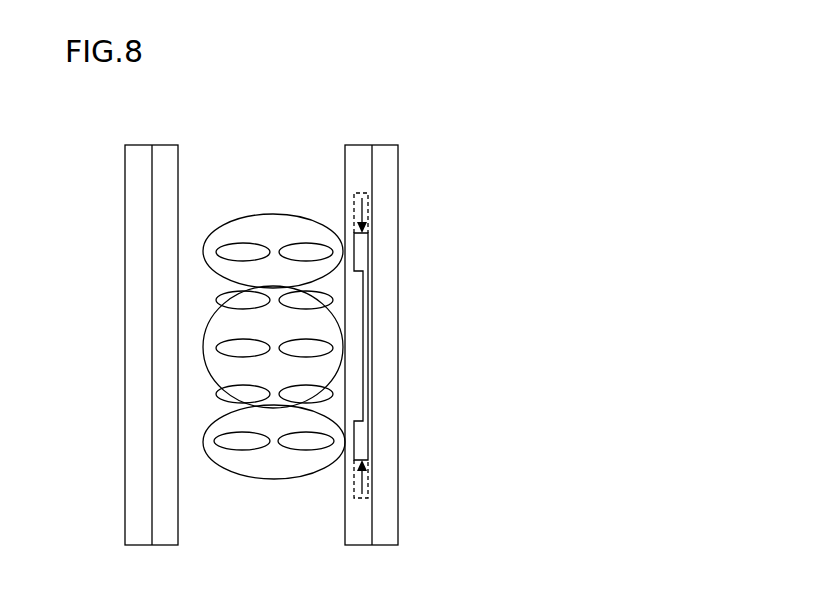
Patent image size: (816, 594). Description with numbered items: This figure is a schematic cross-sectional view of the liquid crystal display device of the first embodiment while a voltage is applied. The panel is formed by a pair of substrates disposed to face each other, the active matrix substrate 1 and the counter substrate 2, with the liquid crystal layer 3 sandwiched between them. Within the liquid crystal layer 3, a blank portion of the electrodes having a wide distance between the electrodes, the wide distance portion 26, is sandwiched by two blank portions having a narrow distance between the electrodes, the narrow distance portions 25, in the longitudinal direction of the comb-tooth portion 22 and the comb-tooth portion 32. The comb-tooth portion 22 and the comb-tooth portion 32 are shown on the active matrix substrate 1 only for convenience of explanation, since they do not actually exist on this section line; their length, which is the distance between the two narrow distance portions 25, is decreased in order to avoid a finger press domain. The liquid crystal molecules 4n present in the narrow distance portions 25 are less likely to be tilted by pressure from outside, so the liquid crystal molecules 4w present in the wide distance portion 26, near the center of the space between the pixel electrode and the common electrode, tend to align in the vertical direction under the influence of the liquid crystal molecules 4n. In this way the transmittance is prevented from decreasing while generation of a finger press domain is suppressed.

The active matrix substrate 1 is at (345, 138).
The counter substrate 2 is at (124, 138).
The liquid crystal layer 3 is at (342, 138).
The narrow distance portion 25 is at (196, 227).
The wide distance portion 26 is at (198, 310).
The liquid crystal molecules 4n is at (230, 256).
The liquid crystal molecules 4w is at (230, 350).
The comb-tooth portion 22 is at (419, 345).
The comb-tooth portion 32 is at (369, 313).